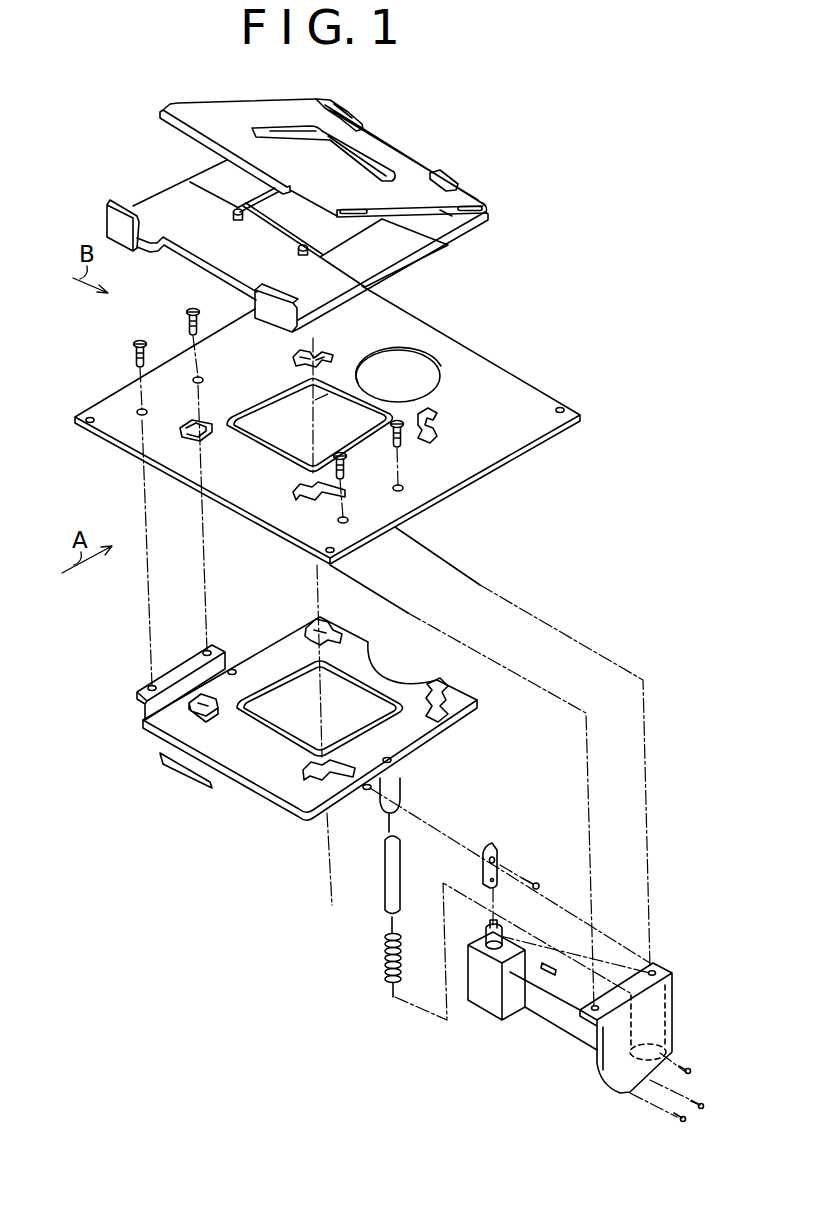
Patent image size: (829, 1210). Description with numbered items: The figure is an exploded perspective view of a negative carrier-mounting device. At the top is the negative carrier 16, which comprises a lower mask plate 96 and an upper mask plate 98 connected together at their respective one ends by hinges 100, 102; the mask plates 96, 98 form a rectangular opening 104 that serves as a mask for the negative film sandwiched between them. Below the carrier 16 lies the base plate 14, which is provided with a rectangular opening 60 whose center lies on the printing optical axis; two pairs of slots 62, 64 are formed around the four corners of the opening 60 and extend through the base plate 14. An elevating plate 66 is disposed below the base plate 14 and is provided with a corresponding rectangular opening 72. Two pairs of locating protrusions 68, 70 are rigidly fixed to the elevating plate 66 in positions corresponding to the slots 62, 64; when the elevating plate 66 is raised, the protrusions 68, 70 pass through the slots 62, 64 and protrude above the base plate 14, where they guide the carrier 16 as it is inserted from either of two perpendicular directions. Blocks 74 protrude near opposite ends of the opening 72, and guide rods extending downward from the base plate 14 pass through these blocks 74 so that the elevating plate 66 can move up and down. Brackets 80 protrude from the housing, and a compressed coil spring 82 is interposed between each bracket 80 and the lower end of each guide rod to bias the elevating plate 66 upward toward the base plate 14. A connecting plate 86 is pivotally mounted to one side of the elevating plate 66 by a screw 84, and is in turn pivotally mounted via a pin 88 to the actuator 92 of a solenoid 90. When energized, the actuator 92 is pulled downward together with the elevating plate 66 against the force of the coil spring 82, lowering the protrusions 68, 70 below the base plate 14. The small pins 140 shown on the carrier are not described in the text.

The base plate 14 is at (113, 440).
The negative carrier 16 is at (460, 160).
The rectangular opening 60 is at (272, 402).
The slots 62 is at (323, 363).
The slots 64 is at (197, 417).
The elevating plate 66 is at (260, 783).
The locating protrusions 68 is at (347, 608).
The locating protrusions 70 is at (214, 712).
The rectangular opening 72 is at (267, 692).
The blocks 74 is at (398, 790).
The brackets 80 is at (668, 1030).
The compressed coil spring 82 is at (387, 955).
The screw 84 is at (537, 880).
The connecting plate 86 is at (500, 850).
The pin 88 is at (548, 970).
The solenoid 90 is at (485, 1002).
The actuator 92 is at (503, 932).
The lower mask plate 96 is at (447, 227).
The upper mask plate 98 is at (245, 110).
The hinge 100 is at (336, 117).
The hinge 102 is at (453, 182).
The rectangular opening 104 is at (353, 158).
The pin 140 is at (234, 222).